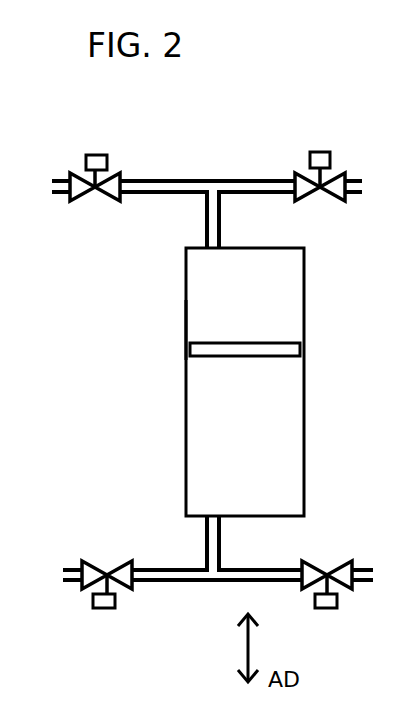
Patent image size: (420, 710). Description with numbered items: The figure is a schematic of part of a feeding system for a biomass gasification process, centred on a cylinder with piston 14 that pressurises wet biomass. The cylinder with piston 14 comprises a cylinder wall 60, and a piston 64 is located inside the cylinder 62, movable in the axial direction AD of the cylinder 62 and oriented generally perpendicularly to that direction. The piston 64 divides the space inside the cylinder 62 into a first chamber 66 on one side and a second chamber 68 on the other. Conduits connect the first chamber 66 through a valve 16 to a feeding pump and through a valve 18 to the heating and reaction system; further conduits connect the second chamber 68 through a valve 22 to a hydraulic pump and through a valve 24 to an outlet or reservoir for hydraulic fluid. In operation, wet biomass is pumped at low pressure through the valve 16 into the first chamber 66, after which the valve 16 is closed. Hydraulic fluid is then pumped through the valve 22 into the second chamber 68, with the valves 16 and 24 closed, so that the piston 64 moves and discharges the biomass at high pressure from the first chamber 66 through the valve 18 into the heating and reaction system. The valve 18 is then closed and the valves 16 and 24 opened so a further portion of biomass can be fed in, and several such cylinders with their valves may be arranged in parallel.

The cylinder with piston 14 is at (161, 375).
The valve 16 is at (107, 615).
The valve 18 is at (342, 615).
The valve 22 is at (328, 147).
The valve 24 is at (93, 152).
The cylinder wall 60 is at (185, 302).
The cylinder 62 is at (183, 328).
The piston 64 is at (287, 347).
The first chamber 66 is at (288, 493).
The second chamber 68 is at (285, 278).